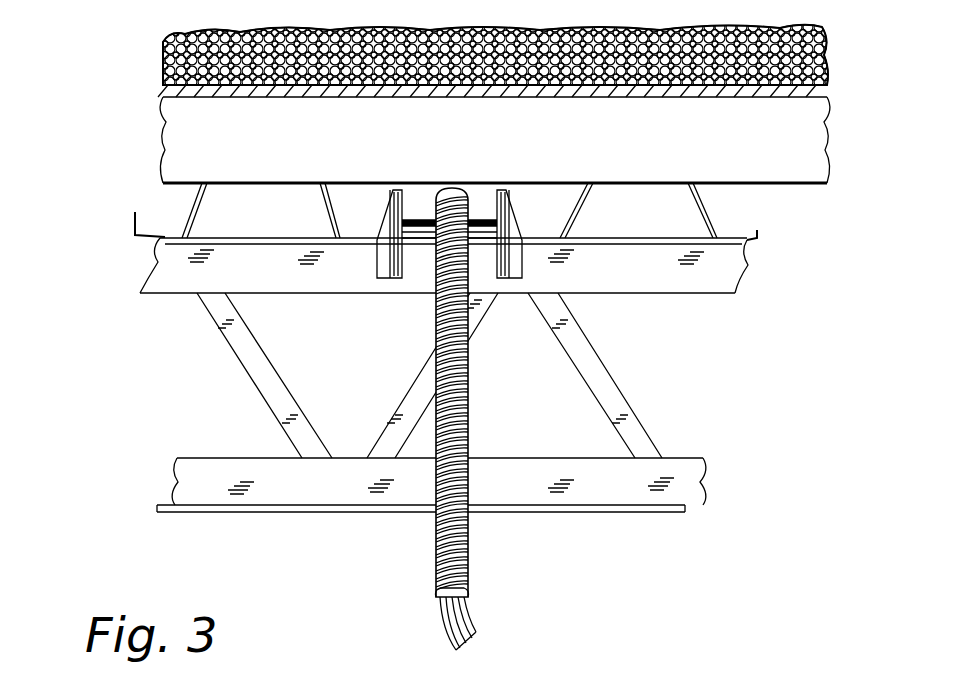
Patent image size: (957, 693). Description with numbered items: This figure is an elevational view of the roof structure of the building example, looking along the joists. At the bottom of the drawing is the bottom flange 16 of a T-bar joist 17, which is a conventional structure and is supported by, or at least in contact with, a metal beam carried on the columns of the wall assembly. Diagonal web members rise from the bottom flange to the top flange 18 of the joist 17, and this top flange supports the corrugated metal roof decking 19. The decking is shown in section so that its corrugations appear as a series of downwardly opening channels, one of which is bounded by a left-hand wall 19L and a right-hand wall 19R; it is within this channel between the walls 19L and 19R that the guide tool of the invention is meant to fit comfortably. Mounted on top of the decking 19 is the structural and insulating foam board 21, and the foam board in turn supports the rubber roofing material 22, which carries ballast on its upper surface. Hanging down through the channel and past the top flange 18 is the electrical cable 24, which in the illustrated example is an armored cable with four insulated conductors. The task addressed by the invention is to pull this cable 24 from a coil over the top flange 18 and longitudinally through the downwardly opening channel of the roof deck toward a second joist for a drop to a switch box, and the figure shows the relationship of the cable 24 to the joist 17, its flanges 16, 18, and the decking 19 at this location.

The bottom flange 16 is at (185, 503).
The T-bar joist 17 is at (178, 362).
The top flange 18 is at (172, 245).
The corrugated metal roof decking 19 is at (137, 180).
The left wall of the channel 19L is at (383, 207).
The right wall of the channel 19R is at (512, 210).
The structural and insulating foam board 21 is at (180, 128).
The rubber roofing material 22 is at (163, 92).
The electrical cable 24 is at (430, 538).